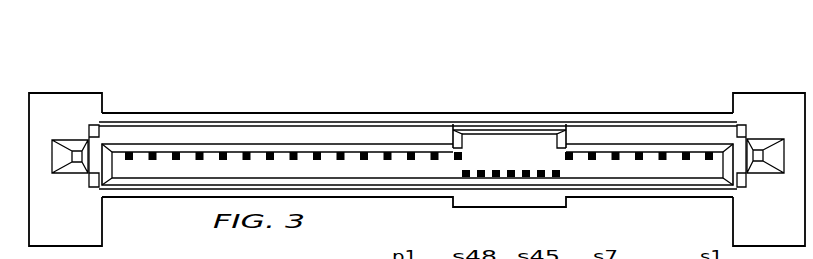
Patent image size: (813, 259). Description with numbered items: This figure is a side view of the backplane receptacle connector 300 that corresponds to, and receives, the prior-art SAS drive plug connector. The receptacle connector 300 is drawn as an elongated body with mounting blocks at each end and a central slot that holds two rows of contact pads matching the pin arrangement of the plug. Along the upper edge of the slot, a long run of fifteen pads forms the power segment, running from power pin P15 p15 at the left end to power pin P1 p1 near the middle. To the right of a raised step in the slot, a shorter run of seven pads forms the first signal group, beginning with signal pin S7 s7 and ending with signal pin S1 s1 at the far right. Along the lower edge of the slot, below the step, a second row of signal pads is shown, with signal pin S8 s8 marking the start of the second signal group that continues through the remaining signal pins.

The backplane receptacle connector 300 is at (417, 124).
The power segment pin P15 p15 is at (129, 151).
The power segment pin P1 p1 is at (452, 150).
The signal segment pin S7 s7 is at (568, 151).
The signal segment pin S1 s1 is at (707, 151).
The signal segment pin S8 s8 is at (554, 178).